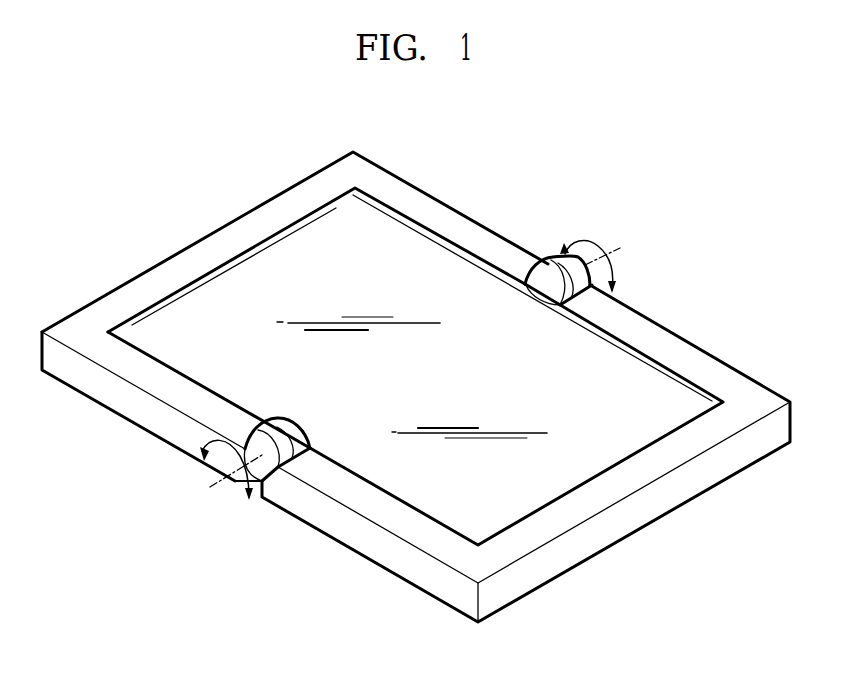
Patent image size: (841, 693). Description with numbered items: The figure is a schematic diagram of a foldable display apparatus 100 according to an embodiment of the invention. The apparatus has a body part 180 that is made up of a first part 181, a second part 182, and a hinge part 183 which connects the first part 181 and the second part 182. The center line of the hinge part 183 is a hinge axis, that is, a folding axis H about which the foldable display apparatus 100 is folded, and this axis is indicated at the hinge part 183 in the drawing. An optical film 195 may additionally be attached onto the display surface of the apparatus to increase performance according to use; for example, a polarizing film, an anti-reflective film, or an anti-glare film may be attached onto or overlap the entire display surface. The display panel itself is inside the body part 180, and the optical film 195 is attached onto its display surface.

The foldable display apparatus 100 is at (416, 384).
The body part 180 is at (416, 384).
The first part 181 is at (295, 313).
The second part 182 is at (737, 363).
The hinge part 183 is at (414, 350).
The optical film 195 is at (573, 467).